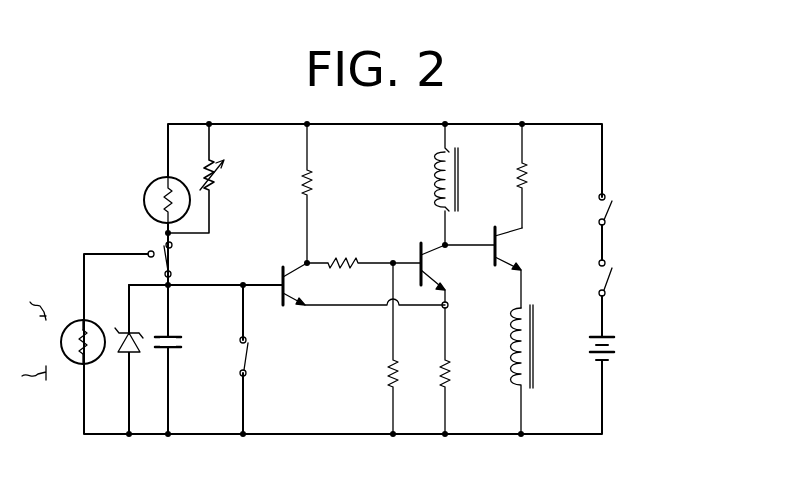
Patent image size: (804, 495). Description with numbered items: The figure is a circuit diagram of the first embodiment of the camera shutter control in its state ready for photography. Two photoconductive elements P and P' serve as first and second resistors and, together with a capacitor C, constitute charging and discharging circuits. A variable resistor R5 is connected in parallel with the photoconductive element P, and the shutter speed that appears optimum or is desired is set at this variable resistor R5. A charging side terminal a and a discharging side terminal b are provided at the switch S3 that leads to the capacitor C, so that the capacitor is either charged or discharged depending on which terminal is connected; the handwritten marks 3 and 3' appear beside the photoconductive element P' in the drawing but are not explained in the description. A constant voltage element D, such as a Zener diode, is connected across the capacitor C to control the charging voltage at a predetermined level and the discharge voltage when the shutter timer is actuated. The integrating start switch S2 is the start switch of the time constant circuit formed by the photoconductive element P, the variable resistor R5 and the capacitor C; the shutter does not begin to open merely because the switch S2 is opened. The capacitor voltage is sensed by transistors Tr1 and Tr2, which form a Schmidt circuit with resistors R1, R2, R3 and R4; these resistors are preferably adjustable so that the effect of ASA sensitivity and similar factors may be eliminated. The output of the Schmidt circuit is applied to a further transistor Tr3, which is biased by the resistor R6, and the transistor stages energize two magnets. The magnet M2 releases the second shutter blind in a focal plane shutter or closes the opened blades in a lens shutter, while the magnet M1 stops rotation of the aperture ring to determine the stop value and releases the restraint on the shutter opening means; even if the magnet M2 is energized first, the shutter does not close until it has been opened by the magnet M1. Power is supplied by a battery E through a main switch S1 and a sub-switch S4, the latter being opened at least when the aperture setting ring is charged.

The photoconductive element P is at (163, 180).
The photoconductive element P' is at (77, 316).
The photoconductive element annotation 3 is at (28, 312).
The photoconductive element annotation 3' is at (23, 376).
The variable resistor R5 is at (210, 178).
The changeover switch S3 is at (172, 257).
The charging side terminal a is at (179, 243).
The discharging side terminal b is at (144, 242).
The constant voltage element D is at (134, 359).
The capacitor C is at (178, 344).
The integrating start switch S2 is at (263, 356).
The transistor Tr1 is at (351, 271).
The resistor R4 is at (326, 193).
The resistor R3 is at (364, 248).
The resistor R2 is at (411, 348).
The resistor R1 is at (462, 368).
The transistor Tr2 is at (414, 259).
The magnet M2 is at (467, 184).
The transistor Tr3 is at (483, 267).
The resistor R6 is at (539, 176).
The magnet M1 is at (543, 369).
The main switch S1 is at (625, 209).
The sub-switch S4 is at (626, 279).
The battery E is at (610, 351).